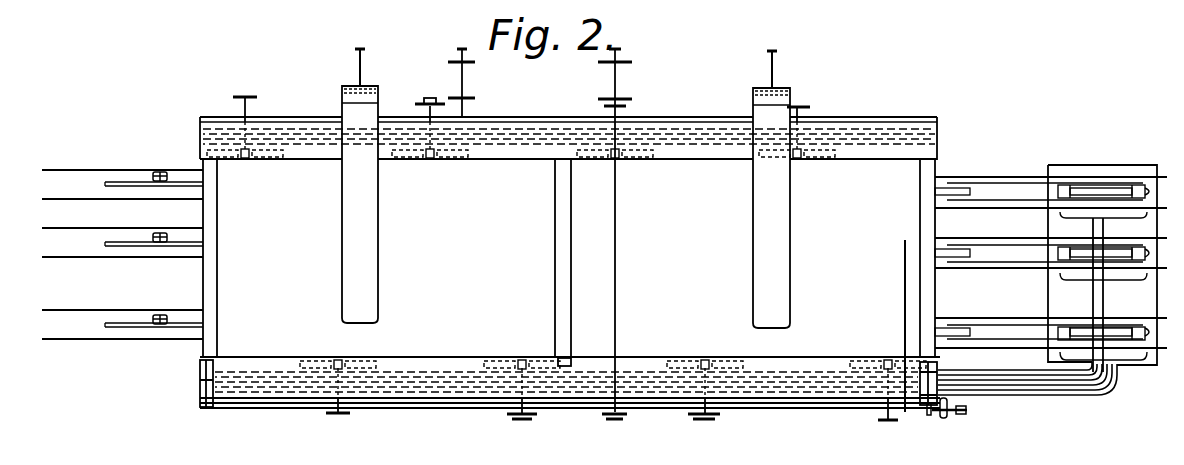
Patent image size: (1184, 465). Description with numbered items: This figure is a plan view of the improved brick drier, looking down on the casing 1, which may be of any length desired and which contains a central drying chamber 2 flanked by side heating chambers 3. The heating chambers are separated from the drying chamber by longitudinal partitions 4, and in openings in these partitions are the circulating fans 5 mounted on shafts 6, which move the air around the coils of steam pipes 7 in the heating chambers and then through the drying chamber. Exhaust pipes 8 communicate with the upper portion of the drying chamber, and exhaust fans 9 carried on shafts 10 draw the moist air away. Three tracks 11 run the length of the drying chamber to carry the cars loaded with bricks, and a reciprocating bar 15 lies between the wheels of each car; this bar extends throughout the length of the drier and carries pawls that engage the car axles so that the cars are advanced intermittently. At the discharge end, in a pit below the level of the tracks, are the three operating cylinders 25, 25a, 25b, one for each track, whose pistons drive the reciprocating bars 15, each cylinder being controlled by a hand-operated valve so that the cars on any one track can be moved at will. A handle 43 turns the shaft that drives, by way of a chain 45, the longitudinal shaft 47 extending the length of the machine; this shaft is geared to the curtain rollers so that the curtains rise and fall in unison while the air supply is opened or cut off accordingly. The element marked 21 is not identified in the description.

The casing 1 is at (437, 262).
The central drying chamber 2 is at (889, 258).
The side heating chambers 3 is at (569, 262).
The longitudinal partitions 4 is at (568, 253).
The circulating fans 5 is at (249, 160).
The shafts 6 is at (249, 110).
The coils of steam pipes 7 is at (700, 142).
The exhaust pipes 8 is at (566, 207).
The exhaust fans 9 is at (343, 98).
The shafts 10 is at (577, 68).
The tracks 11 is at (78, 170).
The reciprocating bar 15 is at (165, 188).
The clamp 21 is at (153, 169).
The first operating cylinder 25 is at (1117, 335).
The second operating cylinder 25a is at (1083, 255).
The third operating cylinder 25b is at (1087, 198).
The handle 43 is at (958, 407).
The chain 45 is at (942, 417).
The longitudinal shaft 47 is at (269, 403).